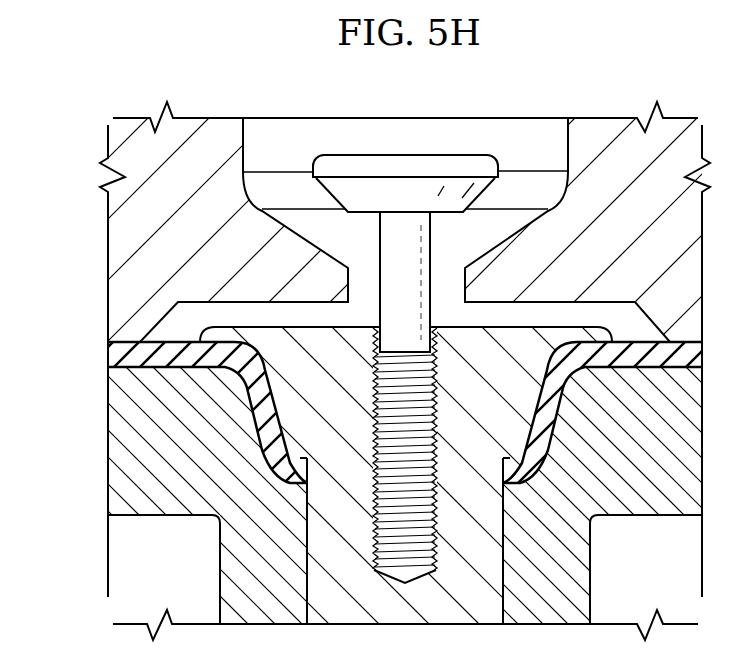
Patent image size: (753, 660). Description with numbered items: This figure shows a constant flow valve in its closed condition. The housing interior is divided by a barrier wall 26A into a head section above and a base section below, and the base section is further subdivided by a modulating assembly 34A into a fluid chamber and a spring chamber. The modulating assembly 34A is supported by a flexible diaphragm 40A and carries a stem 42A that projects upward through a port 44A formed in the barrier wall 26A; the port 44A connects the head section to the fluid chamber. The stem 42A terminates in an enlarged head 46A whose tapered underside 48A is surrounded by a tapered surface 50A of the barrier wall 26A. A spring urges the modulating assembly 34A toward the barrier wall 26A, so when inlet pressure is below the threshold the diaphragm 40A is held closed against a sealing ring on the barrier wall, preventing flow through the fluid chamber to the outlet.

The barrier wall 26A is at (600, 128).
The modulating assembly 34A is at (228, 563).
The flexible diaphragm 40A is at (115, 360).
The stem 42A is at (427, 396).
The port 44A is at (370, 290).
The enlarged head 46A is at (387, 155).
The tapered underside 48A is at (483, 192).
The tapered surface 50A is at (298, 228).